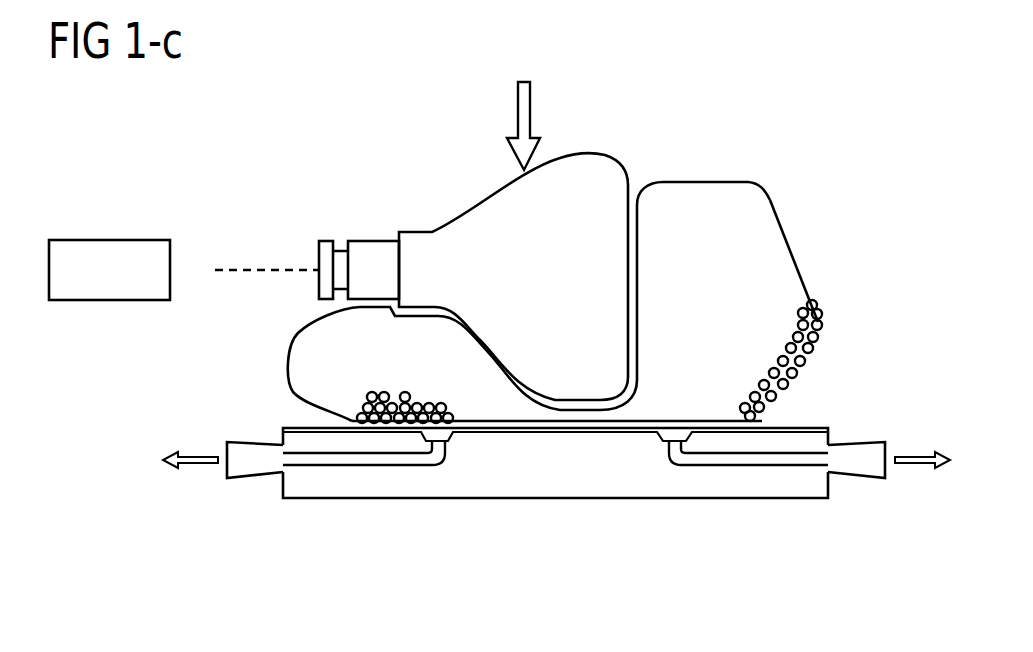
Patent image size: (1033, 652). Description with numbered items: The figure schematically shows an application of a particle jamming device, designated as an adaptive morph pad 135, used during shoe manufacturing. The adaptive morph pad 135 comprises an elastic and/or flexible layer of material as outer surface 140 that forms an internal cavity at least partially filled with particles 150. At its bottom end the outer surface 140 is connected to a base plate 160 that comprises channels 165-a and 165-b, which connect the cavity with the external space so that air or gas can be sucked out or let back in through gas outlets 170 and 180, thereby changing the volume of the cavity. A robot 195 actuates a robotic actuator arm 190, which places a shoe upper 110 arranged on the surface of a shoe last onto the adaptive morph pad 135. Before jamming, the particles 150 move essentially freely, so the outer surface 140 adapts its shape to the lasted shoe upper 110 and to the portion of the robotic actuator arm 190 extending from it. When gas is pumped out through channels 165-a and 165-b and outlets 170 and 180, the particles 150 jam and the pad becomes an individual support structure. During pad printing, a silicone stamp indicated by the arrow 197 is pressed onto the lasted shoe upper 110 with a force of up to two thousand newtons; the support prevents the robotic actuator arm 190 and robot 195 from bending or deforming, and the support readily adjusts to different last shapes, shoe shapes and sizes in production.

The shoe upper 110 is at (592, 175).
The adaptive morph pad 135 is at (806, 199).
The outer surface 140 is at (718, 178).
The particles 150 is at (822, 330).
The base plate 160 is at (557, 472).
The channel 165-a is at (357, 462).
The channel 165-b is at (757, 462).
The gas outlet 170 is at (257, 465).
The gas outlet 180 is at (862, 462).
The robotic actuator arm 190 is at (371, 250).
The robot 195 is at (110, 252).
The arrow 197 is at (518, 107).